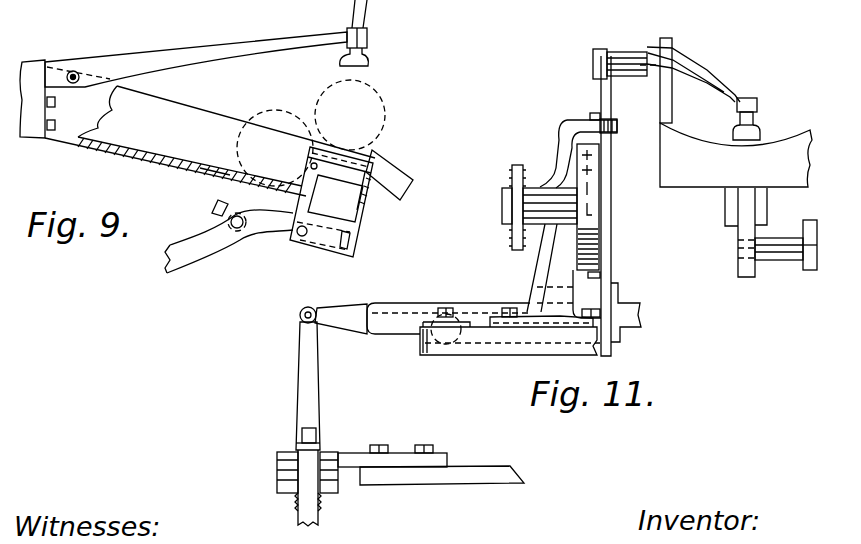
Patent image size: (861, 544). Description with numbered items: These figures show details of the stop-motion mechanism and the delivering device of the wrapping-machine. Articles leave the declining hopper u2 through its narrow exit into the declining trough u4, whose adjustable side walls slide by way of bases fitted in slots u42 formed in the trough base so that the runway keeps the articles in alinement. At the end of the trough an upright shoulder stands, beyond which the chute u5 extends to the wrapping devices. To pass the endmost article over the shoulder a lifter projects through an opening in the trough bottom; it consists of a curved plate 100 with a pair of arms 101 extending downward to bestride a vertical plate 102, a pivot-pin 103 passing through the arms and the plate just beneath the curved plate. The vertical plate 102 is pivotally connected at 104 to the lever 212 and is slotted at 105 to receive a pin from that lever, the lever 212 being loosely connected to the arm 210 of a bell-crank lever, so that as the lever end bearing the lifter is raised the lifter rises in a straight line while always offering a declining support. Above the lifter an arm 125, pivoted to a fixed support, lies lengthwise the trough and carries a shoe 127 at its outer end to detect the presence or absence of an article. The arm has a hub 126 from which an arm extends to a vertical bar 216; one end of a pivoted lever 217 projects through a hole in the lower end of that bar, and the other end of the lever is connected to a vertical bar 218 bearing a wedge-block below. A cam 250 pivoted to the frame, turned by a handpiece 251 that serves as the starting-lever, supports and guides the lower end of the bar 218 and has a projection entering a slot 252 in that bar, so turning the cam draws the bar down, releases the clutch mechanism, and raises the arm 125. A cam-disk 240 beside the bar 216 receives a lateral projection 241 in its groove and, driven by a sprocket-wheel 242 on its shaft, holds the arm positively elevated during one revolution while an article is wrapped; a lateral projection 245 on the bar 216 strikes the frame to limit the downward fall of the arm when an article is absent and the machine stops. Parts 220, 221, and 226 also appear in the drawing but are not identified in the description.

In FIG. 9, the declining hopper u2 is at (32, 62).
In FIG. 9, the declining trough u4 is at (130, 146).
In FIG. 9, the slots u42 is at (222, 165).
In FIG. 9, the chute u5 is at (405, 178).
In FIG. 11, the chute u5 is at (712, 172).
In FIG. 9, the arm 125 is at (190, 50).
In FIG. 11, the arm 125 is at (703, 75).
In FIG. 11, the hub 126 is at (630, 54).
In FIG. 9, the shoe 127 is at (370, 62).
In FIG. 11, the shoe 127 is at (753, 127).
In FIG. 9, the curved plate 100 is at (363, 153).
In FIG. 9, the arms 101 is at (350, 220).
In FIG. 11, the arms 101 is at (757, 207).
In FIG. 9, the vertical plate 102 is at (353, 230).
In FIG. 11, the vertical plate 102 is at (740, 266).
In FIG. 9, the pivot-pin 103 is at (307, 165).
In FIG. 9, the pivotal connection 104 is at (300, 236).
In FIG. 9, the slot 105 is at (343, 247).
In FIG. 9, the arm of bell-crank lever 210 is at (213, 207).
In FIG. 9, the lever 212 is at (197, 257).
In FIG. 11, the vertical bar 216 is at (599, 90).
In FIG. 11, the pivoted lever 217 is at (354, 316).
In FIG. 11, the vertical bar 218 is at (305, 343).
In FIG. 9, the rail 220 is at (307, 6).
In FIG. 9, the rod 221 is at (308, 15).
In FIG. 9, the bar 226 is at (297, 17).
In FIG. 11, the cam-disk 240 is at (593, 196).
In FIG. 11, the lateral projection 241 is at (600, 274).
In FIG. 11, the sprocket-wheel 242 is at (512, 176).
In FIG. 11, the lateral projection 245 is at (595, 117).
In FIG. 11, the cam 250 is at (278, 461).
In FIG. 11, the handpiece 251 is at (308, 510).
In FIG. 11, the slot 252 is at (313, 433).